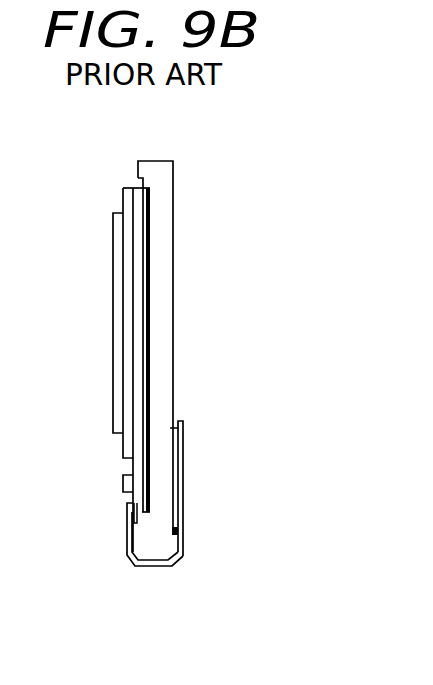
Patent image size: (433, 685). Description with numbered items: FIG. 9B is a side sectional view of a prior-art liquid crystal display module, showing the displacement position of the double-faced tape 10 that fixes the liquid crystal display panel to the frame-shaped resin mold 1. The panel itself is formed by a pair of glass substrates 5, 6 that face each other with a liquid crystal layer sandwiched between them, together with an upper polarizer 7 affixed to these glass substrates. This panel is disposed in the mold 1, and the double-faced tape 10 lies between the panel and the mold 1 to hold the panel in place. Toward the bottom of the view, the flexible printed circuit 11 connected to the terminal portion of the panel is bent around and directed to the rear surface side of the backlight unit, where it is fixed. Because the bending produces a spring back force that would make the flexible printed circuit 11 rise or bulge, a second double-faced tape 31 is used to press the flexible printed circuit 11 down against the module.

The mold 1 is at (167, 174).
The glass substrate 5 is at (130, 248).
The glass substrate 6 is at (146, 273).
The upper polarizer 7 is at (112, 294).
The double-faced tape 10 is at (141, 210).
The flexible printed circuit 11 is at (183, 541).
The double-faced tape 31 is at (172, 518).